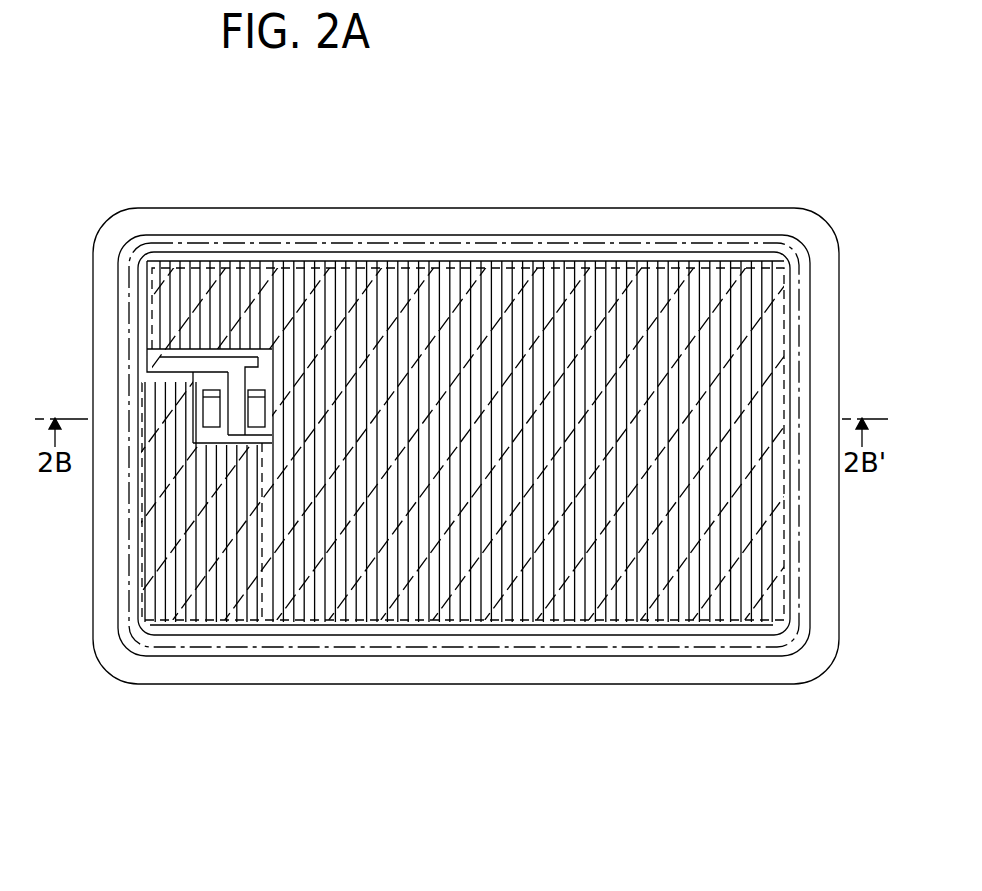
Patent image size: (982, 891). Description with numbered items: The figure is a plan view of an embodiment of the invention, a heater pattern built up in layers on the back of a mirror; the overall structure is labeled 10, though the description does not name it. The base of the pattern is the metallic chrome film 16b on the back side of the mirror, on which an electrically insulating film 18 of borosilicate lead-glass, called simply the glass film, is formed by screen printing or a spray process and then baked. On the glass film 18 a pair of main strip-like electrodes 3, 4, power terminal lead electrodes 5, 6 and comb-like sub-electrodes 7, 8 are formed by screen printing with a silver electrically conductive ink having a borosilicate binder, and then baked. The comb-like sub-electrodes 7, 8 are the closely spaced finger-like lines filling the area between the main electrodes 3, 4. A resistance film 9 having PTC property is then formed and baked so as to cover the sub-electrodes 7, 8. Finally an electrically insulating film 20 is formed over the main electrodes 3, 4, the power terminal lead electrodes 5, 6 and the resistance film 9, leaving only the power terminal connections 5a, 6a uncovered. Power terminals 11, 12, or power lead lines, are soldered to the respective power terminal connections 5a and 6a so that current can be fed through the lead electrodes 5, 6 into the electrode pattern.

The main strip-like electrode 3 is at (320, 255).
The main strip-like electrode 4 is at (440, 632).
The power terminal lead electrode 5 is at (215, 443).
The power terminal connection 5a is at (216, 388).
The power terminal lead electrode 6 is at (268, 545).
The power terminal connection 6a is at (253, 390).
The comb-like sub-electrode 7 is at (662, 275).
The comb-like sub-electrode 8 is at (667, 603).
The resistance film 9 is at (450, 272).
The solar cell 10 is at (407, 234).
The power terminal 11 is at (213, 417).
The power terminal 12 is at (252, 410).
The metallic chrome film 16b is at (276, 667).
The electrically insulating film 18 is at (123, 252).
The electrically insulating film 20 is at (605, 648).